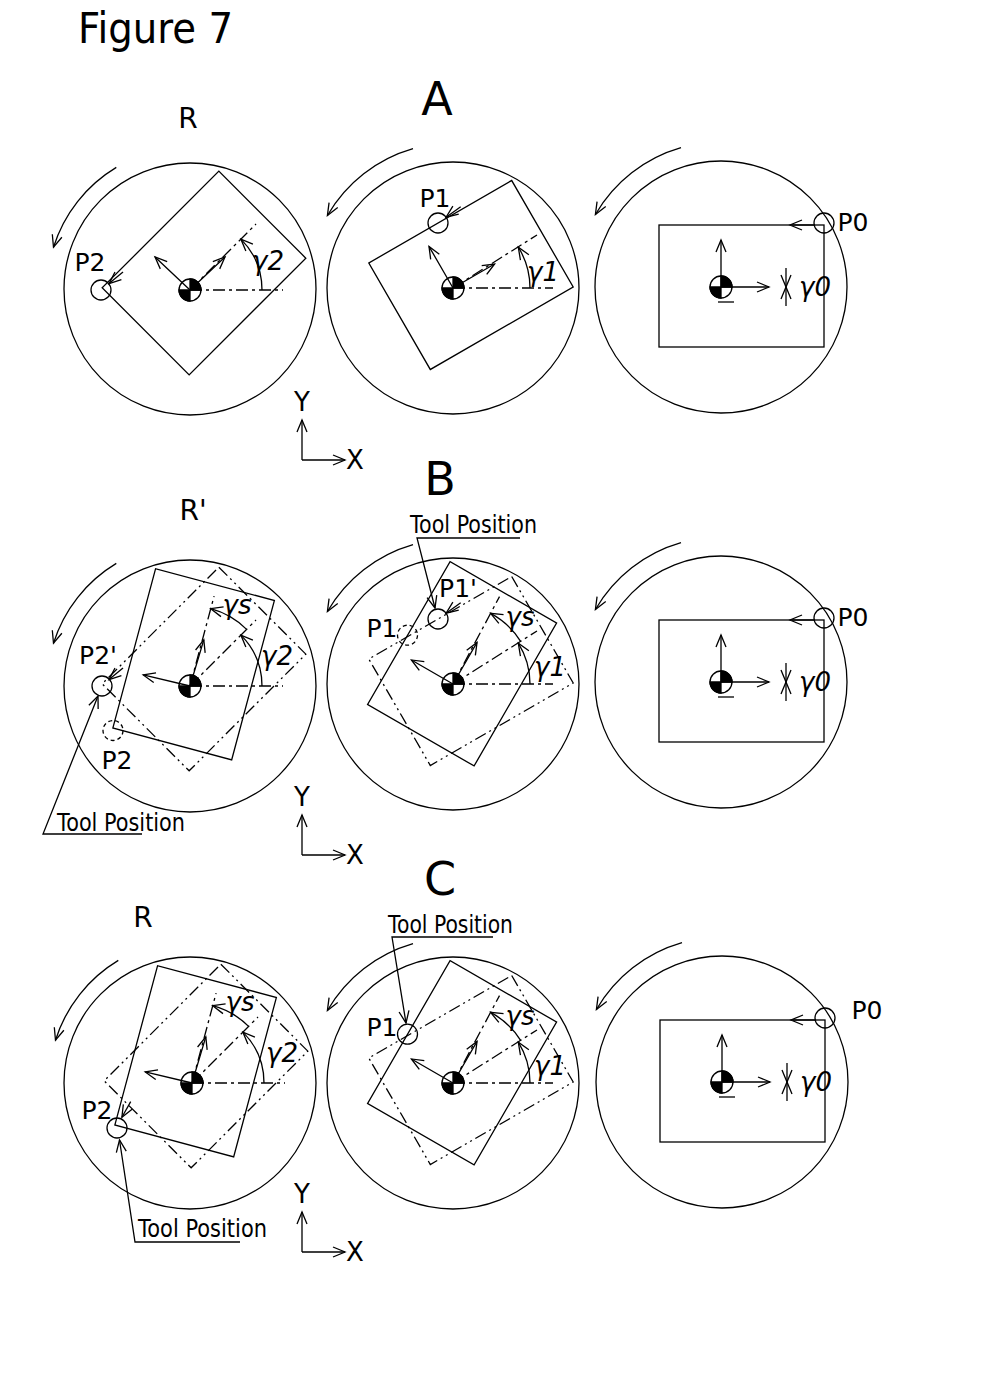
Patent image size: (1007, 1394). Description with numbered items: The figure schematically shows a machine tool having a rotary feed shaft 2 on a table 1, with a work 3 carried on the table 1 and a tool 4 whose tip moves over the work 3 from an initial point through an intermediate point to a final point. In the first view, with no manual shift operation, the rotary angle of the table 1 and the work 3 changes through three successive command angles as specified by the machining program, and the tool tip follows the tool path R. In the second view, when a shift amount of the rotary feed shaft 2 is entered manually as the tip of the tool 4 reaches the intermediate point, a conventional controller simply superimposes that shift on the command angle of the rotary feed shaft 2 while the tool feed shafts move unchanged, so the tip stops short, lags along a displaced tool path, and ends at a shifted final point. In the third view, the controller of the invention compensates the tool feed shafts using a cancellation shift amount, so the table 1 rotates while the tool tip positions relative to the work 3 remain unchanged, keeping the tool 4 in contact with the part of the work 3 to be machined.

In FIG. 7A, the table 1 is at (721, 259).
In FIG. 7B, the table 1 is at (721, 654).
In FIG. 7C, the table 1 is at (722, 1052).
In FIG. 7A, the rotary feed shaft 2 is at (705, 307).
In FIG. 7B, the rotary feed shaft 2 is at (705, 702).
In FIG. 7C, the rotary feed shaft 2 is at (709, 1098).
In FIG. 7A, the work 3 is at (741, 315).
In FIG. 7B, the work 3 is at (741, 710).
In FIG. 7C, the work 3 is at (742, 1105).
In FIG. 7A, the tool 4 is at (825, 186).
In FIG. 7B, the tool 4 is at (825, 581).
In FIG. 7C, the tool 4 is at (828, 981).